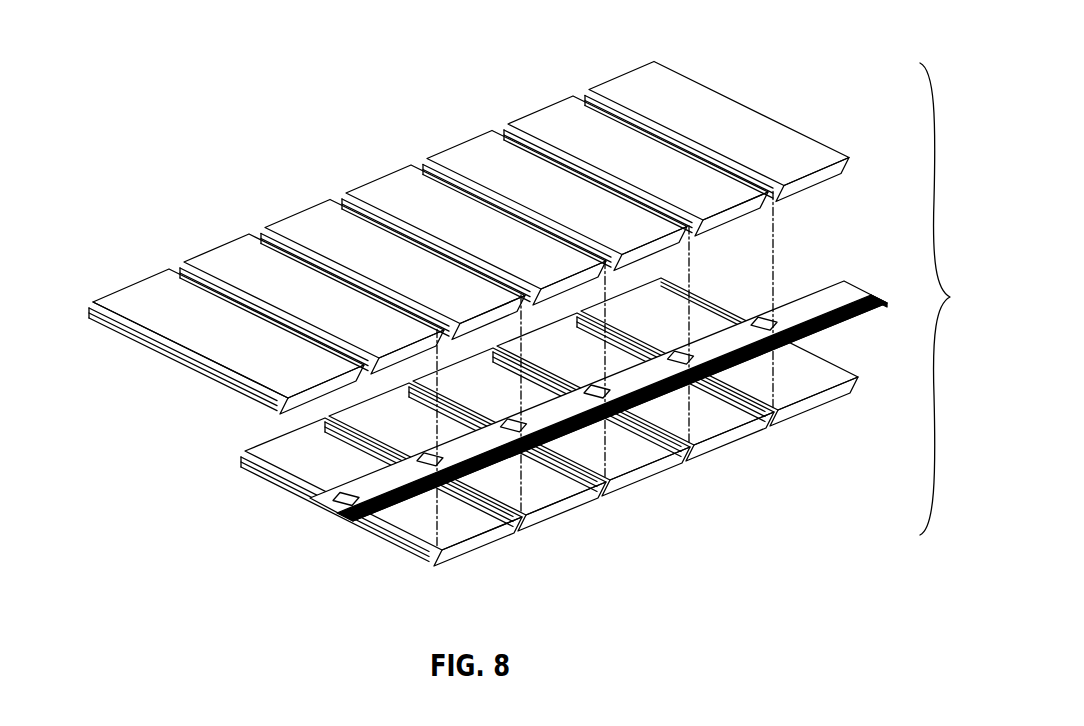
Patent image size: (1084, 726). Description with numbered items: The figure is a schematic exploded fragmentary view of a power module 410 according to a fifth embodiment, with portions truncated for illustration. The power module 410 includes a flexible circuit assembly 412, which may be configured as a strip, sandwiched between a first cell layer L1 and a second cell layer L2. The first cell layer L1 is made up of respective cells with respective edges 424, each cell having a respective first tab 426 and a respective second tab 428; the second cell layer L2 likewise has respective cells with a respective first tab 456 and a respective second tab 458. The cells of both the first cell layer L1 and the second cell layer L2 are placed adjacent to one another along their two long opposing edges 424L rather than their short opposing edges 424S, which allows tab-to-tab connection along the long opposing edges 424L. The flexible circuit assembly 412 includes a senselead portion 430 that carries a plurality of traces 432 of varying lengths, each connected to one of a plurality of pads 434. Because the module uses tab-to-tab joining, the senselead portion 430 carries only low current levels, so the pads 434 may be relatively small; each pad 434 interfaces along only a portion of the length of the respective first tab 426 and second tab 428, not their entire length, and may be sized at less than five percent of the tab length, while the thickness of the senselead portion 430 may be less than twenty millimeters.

The power module 410 is at (850, 30).
The flexible circuit assembly 412 is at (853, 275).
The edges 424 is at (202, 242).
The short opposing edges 424S is at (117, 282).
The long opposing edges 424L is at (144, 352).
The first tab 426 is at (650, 126).
The second tab 428 is at (565, 162).
The senselead portion 430 is at (884, 291).
The traces 432 is at (387, 491).
The pads 434 is at (686, 352).
The first tab 456 is at (757, 423).
The second tab 458 is at (667, 452).
The first cell layer L1 is at (576, 74).
The second cell layer L2 is at (739, 448).